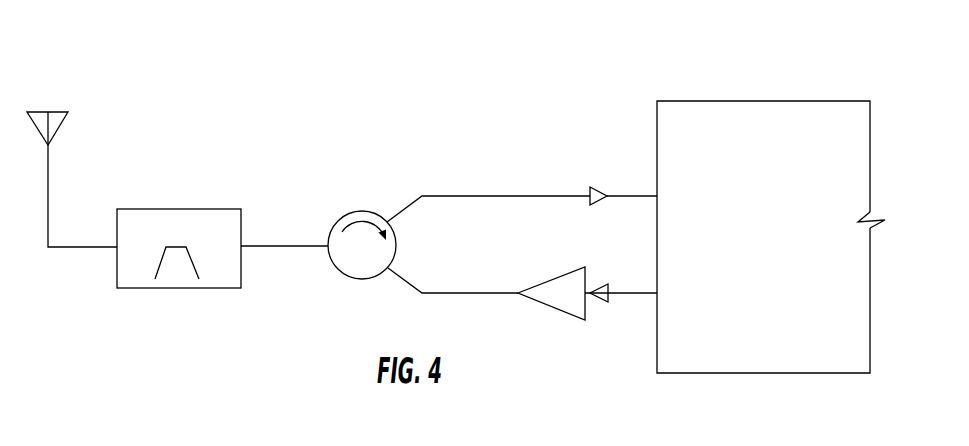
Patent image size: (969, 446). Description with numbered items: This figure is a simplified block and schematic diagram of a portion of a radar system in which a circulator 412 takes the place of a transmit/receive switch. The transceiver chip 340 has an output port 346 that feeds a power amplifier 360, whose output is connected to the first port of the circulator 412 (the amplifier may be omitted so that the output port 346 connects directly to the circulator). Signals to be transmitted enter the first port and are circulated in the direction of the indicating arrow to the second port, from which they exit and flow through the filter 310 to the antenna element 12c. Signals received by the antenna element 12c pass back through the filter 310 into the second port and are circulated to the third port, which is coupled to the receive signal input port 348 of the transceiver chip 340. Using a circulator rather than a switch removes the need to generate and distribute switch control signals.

The antenna element 12c is at (64, 119).
The filter 310 is at (186, 209).
The circulator 412 is at (343, 180).
The receive signal input port 348 is at (655, 195).
The power amplifier 360 is at (566, 312).
The output port 346 is at (655, 297).
The transceiver chip 340 is at (783, 100).